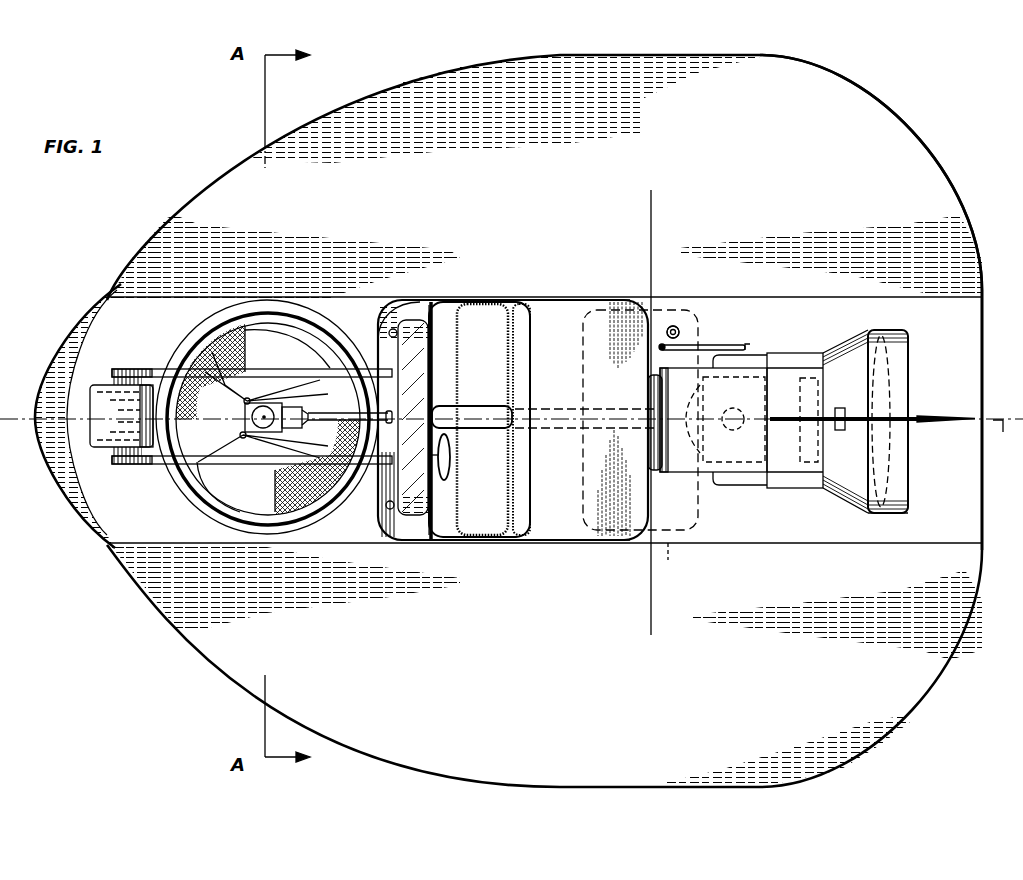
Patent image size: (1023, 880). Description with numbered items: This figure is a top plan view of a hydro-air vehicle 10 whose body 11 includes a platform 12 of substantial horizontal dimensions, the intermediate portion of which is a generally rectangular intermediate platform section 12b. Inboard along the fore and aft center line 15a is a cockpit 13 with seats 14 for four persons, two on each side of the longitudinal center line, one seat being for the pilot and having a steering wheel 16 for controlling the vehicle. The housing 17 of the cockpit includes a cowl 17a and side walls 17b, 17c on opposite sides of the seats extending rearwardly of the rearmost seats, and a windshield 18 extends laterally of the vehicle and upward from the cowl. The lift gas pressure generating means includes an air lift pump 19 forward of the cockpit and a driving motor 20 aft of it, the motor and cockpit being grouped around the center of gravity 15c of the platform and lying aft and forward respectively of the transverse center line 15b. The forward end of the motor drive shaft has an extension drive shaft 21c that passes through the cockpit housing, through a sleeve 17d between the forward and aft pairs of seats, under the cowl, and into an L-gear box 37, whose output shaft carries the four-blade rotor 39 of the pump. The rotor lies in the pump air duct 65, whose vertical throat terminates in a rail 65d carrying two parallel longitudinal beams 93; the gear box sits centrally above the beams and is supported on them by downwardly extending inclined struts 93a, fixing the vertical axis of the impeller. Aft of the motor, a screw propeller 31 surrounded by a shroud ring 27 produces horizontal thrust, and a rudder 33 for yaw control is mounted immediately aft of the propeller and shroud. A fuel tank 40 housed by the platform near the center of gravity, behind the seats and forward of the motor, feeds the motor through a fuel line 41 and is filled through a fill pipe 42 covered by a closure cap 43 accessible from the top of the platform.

The hydro-air vehicle 10 is at (546, 421).
The body 11 is at (842, 77).
The platform 12 is at (868, 116).
The intermediate platform section 12b is at (984, 524).
The cockpit 13 is at (426, 312).
The seats 14 is at (490, 316).
The fore and aft center line 15a is at (1002, 438).
The transverse center line 15b is at (648, 597).
The center of gravity 15c is at (650, 430).
The steering wheel 16 is at (445, 480).
The housing 17 is at (479, 543).
The cowl 17a is at (383, 332).
The side wall 17b is at (560, 299).
The side wall 17c is at (565, 543).
The sleeve 17d is at (503, 413).
The windshield 18 is at (415, 520).
The air lift pump 19 is at (278, 328).
The driving motor 20 is at (706, 468).
The extension drive shaft 21c is at (388, 414).
The shroud ring 27 is at (908, 334).
The screw propeller 31 is at (893, 514).
The rudder 33 is at (935, 416).
The L-gear box 37 is at (245, 419).
The four-blade rotor 39 is at (222, 487).
The fuel tank 40 is at (679, 559).
The fuel line 41 is at (738, 347).
The fill pipe 42 is at (676, 326).
The closure cap 43 is at (680, 333).
The pump air duct 65 is at (255, 318).
The rail 65d is at (192, 480).
The longitudinal beams 93 is at (138, 370).
The inclined struts 93a is at (303, 385).